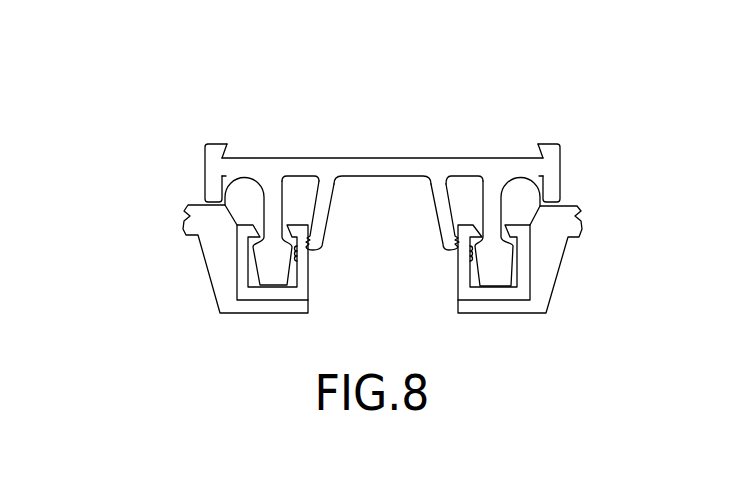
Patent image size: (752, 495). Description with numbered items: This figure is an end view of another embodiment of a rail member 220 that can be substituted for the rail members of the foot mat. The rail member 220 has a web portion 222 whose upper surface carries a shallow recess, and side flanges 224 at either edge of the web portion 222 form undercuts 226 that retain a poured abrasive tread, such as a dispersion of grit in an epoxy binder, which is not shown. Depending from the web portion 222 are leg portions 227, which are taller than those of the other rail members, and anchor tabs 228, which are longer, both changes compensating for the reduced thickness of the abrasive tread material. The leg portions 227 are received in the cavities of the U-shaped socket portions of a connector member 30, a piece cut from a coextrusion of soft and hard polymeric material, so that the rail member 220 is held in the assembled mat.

The rail member 220 is at (197, 161).
The web portion 222 is at (385, 157).
The side flanges 224 is at (213, 144).
The undercuts 226 is at (227, 149).
The leg portions 227 is at (272, 258).
The anchor tabs 228 is at (327, 224).
The connector member 30 is at (550, 310).